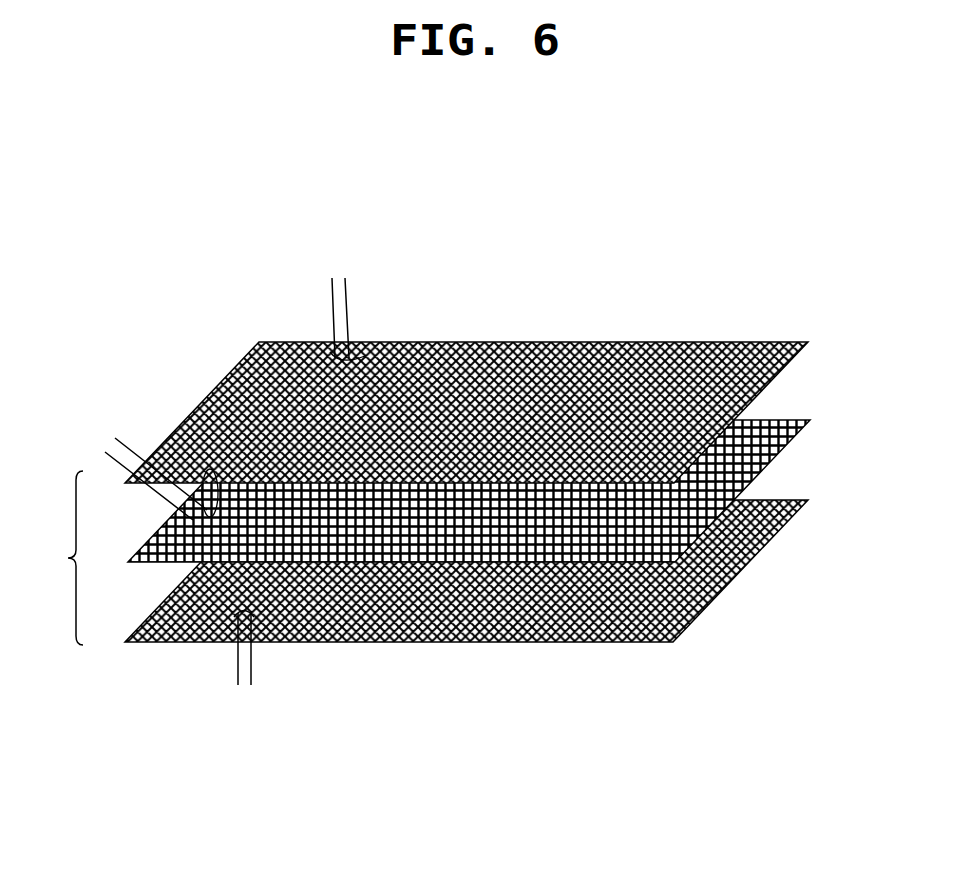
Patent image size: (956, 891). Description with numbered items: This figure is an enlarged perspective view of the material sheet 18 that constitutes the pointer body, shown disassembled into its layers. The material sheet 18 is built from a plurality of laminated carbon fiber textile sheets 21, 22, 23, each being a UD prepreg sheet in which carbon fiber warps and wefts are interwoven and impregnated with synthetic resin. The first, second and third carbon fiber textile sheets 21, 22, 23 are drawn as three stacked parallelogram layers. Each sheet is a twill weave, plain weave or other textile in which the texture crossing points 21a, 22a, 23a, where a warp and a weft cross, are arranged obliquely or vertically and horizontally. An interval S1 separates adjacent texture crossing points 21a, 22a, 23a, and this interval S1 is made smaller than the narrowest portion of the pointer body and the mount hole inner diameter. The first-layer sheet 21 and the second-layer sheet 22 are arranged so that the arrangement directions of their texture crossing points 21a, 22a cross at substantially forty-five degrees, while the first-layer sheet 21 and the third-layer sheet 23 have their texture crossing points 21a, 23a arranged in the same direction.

The material sheet 18 is at (59, 558).
The carbon fiber textile sheet of the first layer 21 is at (490, 342).
The carbon fiber textile sheet of the second layer 22 is at (783, 420).
The carbon fiber textile sheet of the third layer 23 is at (487, 645).
The texture crossing point 21a is at (322, 352).
The texture crossing point 22a is at (212, 485).
The texture crossing point 23a is at (238, 618).
The interval S1 is at (375, 305).